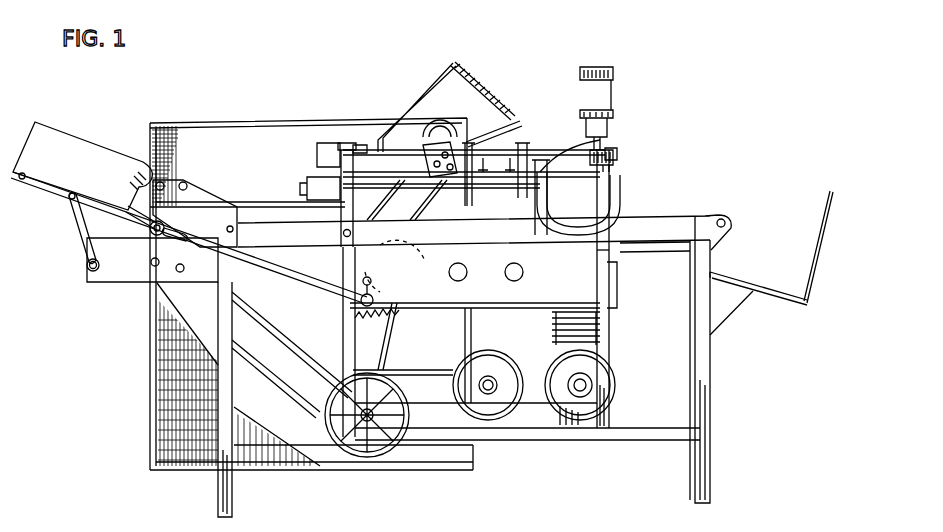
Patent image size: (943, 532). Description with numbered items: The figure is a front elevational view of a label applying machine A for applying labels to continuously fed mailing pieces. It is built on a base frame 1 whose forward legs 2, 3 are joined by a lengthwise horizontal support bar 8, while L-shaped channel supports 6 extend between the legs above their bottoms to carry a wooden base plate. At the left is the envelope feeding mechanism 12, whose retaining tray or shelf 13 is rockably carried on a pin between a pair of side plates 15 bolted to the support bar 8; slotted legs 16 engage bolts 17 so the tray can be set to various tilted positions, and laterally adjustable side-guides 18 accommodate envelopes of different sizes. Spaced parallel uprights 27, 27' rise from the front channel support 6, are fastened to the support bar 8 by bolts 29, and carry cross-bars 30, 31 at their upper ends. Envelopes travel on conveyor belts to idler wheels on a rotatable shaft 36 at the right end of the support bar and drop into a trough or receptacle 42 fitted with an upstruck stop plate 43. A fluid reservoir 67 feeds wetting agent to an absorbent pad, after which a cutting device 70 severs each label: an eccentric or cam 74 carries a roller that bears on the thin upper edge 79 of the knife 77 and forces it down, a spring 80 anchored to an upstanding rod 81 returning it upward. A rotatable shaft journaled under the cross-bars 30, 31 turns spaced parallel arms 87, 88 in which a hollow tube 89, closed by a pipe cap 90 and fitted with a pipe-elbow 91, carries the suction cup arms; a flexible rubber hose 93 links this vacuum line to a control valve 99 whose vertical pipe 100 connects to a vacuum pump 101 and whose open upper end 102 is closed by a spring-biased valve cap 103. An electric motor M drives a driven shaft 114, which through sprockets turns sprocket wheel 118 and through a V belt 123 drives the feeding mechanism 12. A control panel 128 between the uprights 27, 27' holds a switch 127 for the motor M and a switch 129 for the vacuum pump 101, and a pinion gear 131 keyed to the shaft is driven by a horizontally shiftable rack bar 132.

The base frame 1 is at (600, 445).
The leg 2 is at (220, 491).
The leg 3 is at (710, 488).
The L-shaped channel support 6 is at (553, 442).
The horizontal support bar 8 is at (306, 128).
The envelope feeding mechanism 12 is at (123, 146).
The retaining tray or shelf 13 is at (76, 138).
The side plate 15 is at (132, 279).
The leg 16 is at (68, 219).
The bolt 17 is at (86, 265).
The side-guide 18 is at (50, 128).
The upright 27 is at (325, 342).
The upright 27' is at (621, 289).
The bolt 29 is at (343, 236).
The cross-bar 30 is at (349, 142).
The cross-bar 31 is at (612, 150).
The rotatable shaft 36 is at (729, 219).
The trough or receptacle 42 is at (756, 290).
The stop plate 43 is at (831, 198).
The fluid reservoir 67 is at (614, 72).
The cutting device 70 is at (523, 104).
The eccentric or cam 74 is at (441, 146).
The knife 77 is at (520, 122).
The upper edge 79 is at (420, 144).
The spring 80 is at (459, 62).
The rod 81 is at (437, 78).
The arm 87 is at (469, 182).
The arm 88 is at (520, 196).
The hollow tube 89 is at (540, 142).
The pipe cap 90 is at (470, 136).
The pipe-elbow 91 is at (546, 160).
The flexible rubber hose 93 is at (621, 203).
The control valve 99 is at (630, 296).
The vertical pipe 100 is at (618, 273).
The vacuum pump 101 is at (604, 324).
The open upper end 102 is at (620, 162).
The valve cap 103 is at (616, 152).
The driven shaft 114 is at (371, 458).
The sprocket wheel 118 is at (386, 316).
The V belt 123 is at (298, 394).
The switch 127 is at (461, 306).
The control panel 128 is at (540, 291).
The switch 129 is at (524, 271).
The pinion gear 131 is at (306, 179).
The rack bar 132 is at (324, 160).
The label applying machine A is at (684, 149).
The electric motor M is at (510, 364).